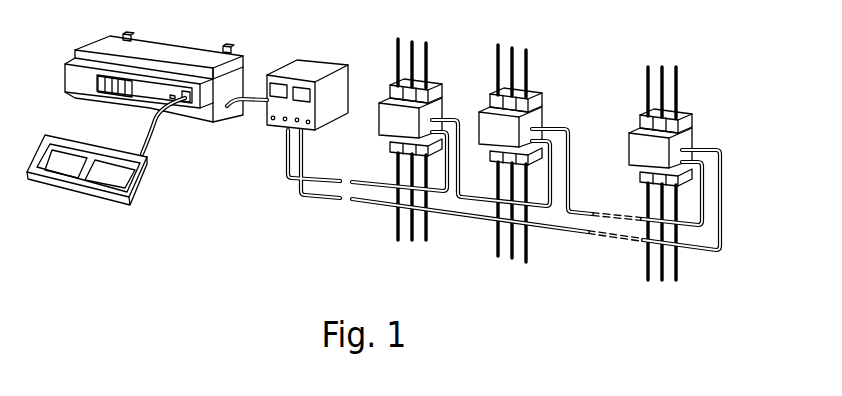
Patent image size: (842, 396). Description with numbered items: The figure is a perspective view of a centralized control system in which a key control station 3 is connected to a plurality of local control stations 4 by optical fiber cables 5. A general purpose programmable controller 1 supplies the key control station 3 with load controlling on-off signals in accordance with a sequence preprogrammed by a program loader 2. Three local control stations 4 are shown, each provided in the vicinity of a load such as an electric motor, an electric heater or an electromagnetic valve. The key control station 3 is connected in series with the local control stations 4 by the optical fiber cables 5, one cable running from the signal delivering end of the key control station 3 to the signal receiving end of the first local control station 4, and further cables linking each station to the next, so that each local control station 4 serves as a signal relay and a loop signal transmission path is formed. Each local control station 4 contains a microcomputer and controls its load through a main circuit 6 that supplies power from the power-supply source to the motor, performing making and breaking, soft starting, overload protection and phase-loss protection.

The programmable controller 1 is at (160, 47).
The program loader 2 is at (115, 198).
The key control station 3 is at (305, 67).
The local control station 4 is at (438, 93).
The optical fiber cable 5 is at (326, 177).
The main circuit 6 is at (535, 48).